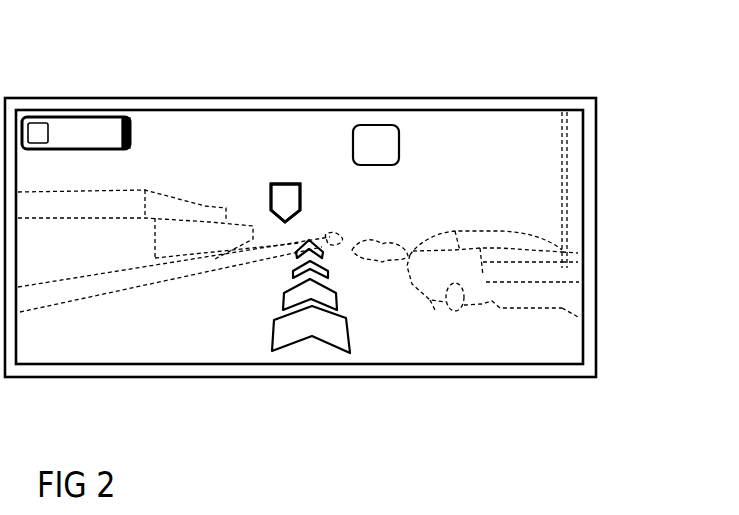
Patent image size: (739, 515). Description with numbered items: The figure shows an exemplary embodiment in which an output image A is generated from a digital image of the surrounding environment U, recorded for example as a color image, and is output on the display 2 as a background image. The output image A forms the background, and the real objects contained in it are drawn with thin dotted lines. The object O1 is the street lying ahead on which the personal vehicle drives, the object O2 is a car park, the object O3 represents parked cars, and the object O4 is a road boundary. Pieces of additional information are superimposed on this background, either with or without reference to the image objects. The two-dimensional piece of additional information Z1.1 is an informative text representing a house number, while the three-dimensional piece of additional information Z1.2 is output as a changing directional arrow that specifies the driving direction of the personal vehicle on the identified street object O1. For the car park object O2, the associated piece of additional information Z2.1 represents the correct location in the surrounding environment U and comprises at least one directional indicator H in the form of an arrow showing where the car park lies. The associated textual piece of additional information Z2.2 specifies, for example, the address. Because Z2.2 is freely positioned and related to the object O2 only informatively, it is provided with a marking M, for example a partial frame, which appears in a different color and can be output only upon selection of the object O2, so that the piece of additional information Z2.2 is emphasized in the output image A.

The display 2 is at (517, 94).
The output image A is at (592, 163).
The object O3 is at (570, 296).
The textual piece of additional information Z2.2 is at (68, 122).
The marking M is at (126, 117).
The object O2 is at (205, 207).
The piece of additional information Z2.1 is at (282, 183).
The directional indicator H is at (290, 185).
The 2D piece of additional information Z1.1 is at (386, 124).
The object O1 is at (155, 343).
The object O4 is at (213, 256).
The 3D piece of additional information Z1.2 is at (334, 348).
The surrounding environment U is at (434, 349).